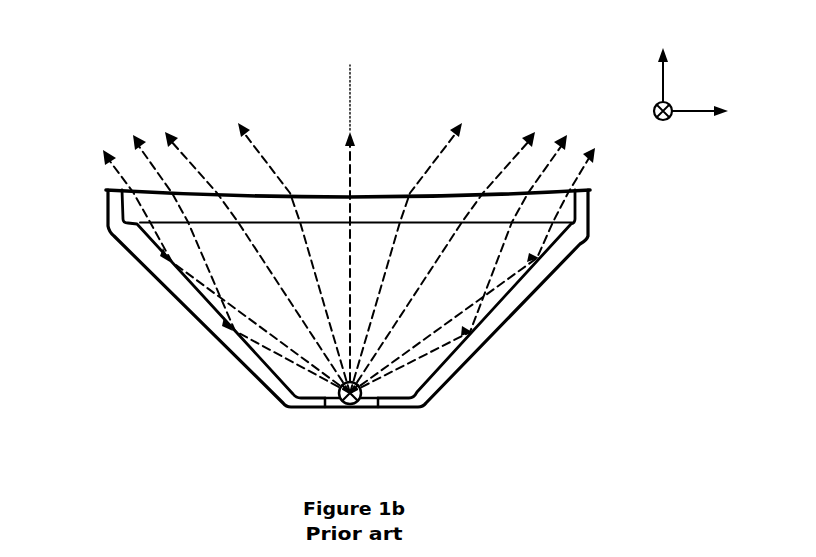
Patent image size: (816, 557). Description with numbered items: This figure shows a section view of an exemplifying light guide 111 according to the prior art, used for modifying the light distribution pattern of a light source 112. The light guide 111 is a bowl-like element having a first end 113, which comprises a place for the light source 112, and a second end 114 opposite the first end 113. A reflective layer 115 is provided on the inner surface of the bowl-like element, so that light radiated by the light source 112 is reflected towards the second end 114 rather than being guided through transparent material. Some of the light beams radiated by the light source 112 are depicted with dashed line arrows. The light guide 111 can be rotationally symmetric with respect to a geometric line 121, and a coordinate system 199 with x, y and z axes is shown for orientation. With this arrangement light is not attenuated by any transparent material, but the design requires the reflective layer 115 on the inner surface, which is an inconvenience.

The light guide 111 is at (108, 207).
The light source 112 is at (352, 408).
The first end 113 is at (308, 408).
The second end 114 is at (315, 196).
The reflective layer 115 is at (437, 356).
The geometric line 121 is at (351, 105).
The coordinate system 199 is at (670, 146).